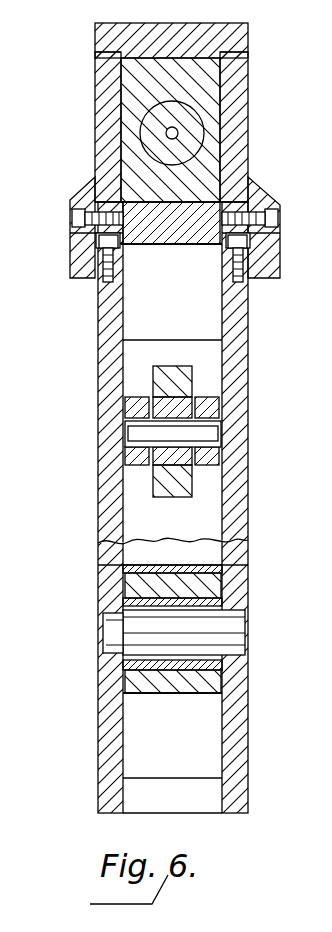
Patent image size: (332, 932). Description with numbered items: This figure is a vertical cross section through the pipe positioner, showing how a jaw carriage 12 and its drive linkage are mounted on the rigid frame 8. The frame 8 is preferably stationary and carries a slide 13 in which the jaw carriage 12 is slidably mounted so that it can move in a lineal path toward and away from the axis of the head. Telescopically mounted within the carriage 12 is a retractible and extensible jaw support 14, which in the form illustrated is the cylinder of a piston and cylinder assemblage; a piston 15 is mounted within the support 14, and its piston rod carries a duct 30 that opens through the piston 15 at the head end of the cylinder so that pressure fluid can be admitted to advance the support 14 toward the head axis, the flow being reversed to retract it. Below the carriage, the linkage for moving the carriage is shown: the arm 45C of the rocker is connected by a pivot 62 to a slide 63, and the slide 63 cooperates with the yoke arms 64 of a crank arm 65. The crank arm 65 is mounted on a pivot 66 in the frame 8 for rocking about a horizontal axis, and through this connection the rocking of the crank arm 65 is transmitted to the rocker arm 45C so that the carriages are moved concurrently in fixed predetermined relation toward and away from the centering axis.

The frame 8 is at (250, 745).
The jaw carriage 12 is at (107, 111).
The slide 13 is at (83, 243).
The jaw support 14 is at (207, 88).
The piston 15 is at (190, 118).
The duct 30 is at (178, 134).
The arm of the rocker 45C is at (137, 405).
The pivot 62 is at (210, 432).
The slide 63 is at (158, 466).
The yoke arms 64 is at (190, 378).
The crank arm 65 is at (212, 680).
The pivot 66 is at (236, 627).